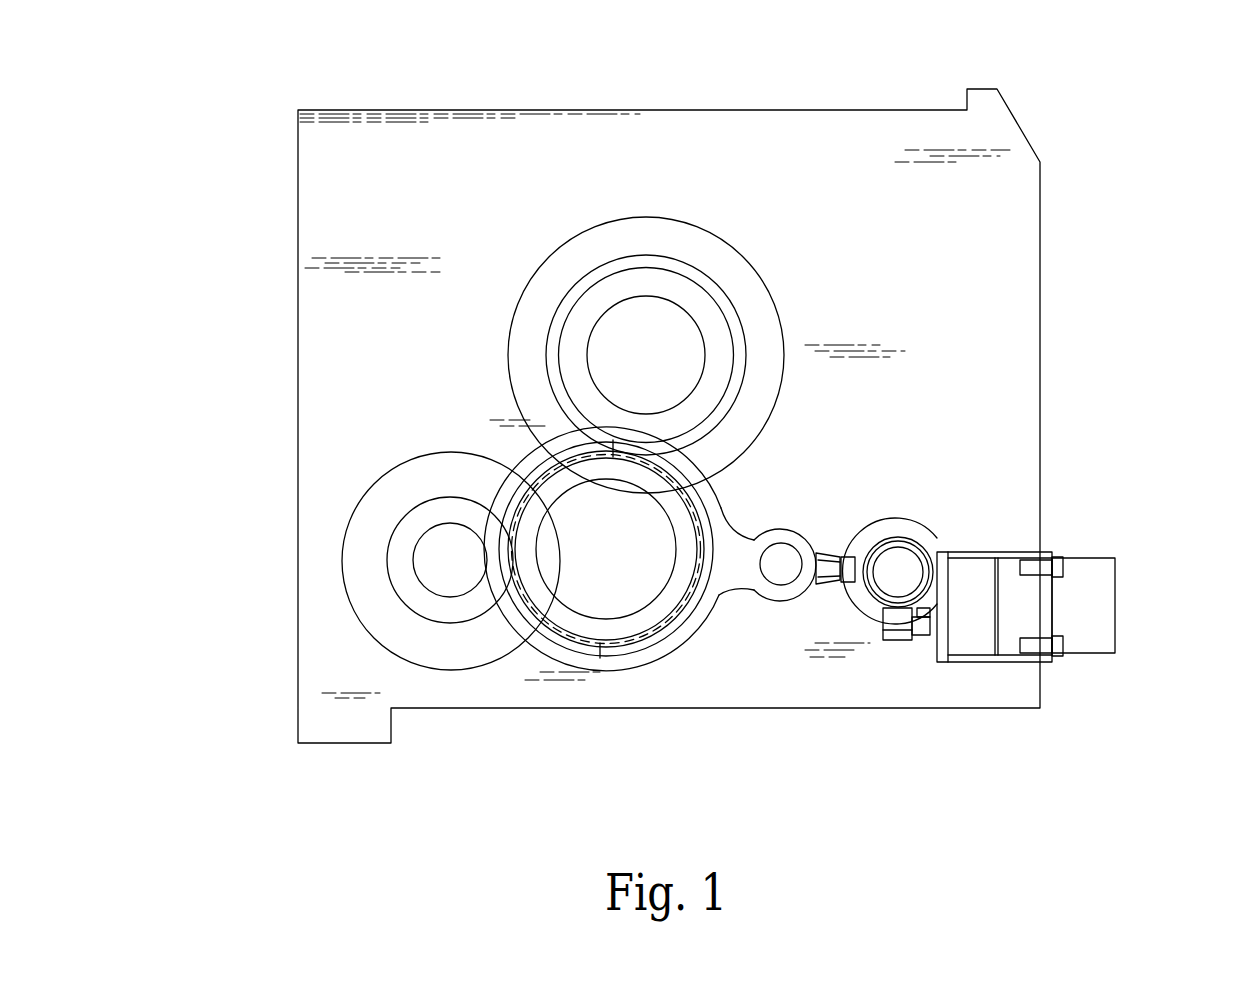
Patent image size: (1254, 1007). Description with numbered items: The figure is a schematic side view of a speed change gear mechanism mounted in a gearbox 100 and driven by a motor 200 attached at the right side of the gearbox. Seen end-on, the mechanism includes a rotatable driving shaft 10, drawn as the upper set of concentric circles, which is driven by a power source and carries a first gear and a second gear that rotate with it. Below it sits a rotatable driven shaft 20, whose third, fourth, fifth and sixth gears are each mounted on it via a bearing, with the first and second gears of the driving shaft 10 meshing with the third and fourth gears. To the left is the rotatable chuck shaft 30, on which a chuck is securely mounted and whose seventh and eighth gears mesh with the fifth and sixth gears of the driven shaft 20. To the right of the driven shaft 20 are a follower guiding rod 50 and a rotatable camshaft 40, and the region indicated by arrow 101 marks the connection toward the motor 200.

The gearbox 100 is at (870, 125).
The driving shaft 10 is at (675, 328).
The driven shaft 20 is at (615, 583).
The chuck shaft 30 is at (435, 562).
The follower guiding rod 50 is at (779, 568).
The coupling shaft 101 is at (830, 522).
The camshaft 40 is at (895, 558).
The motor 200 is at (1103, 614).